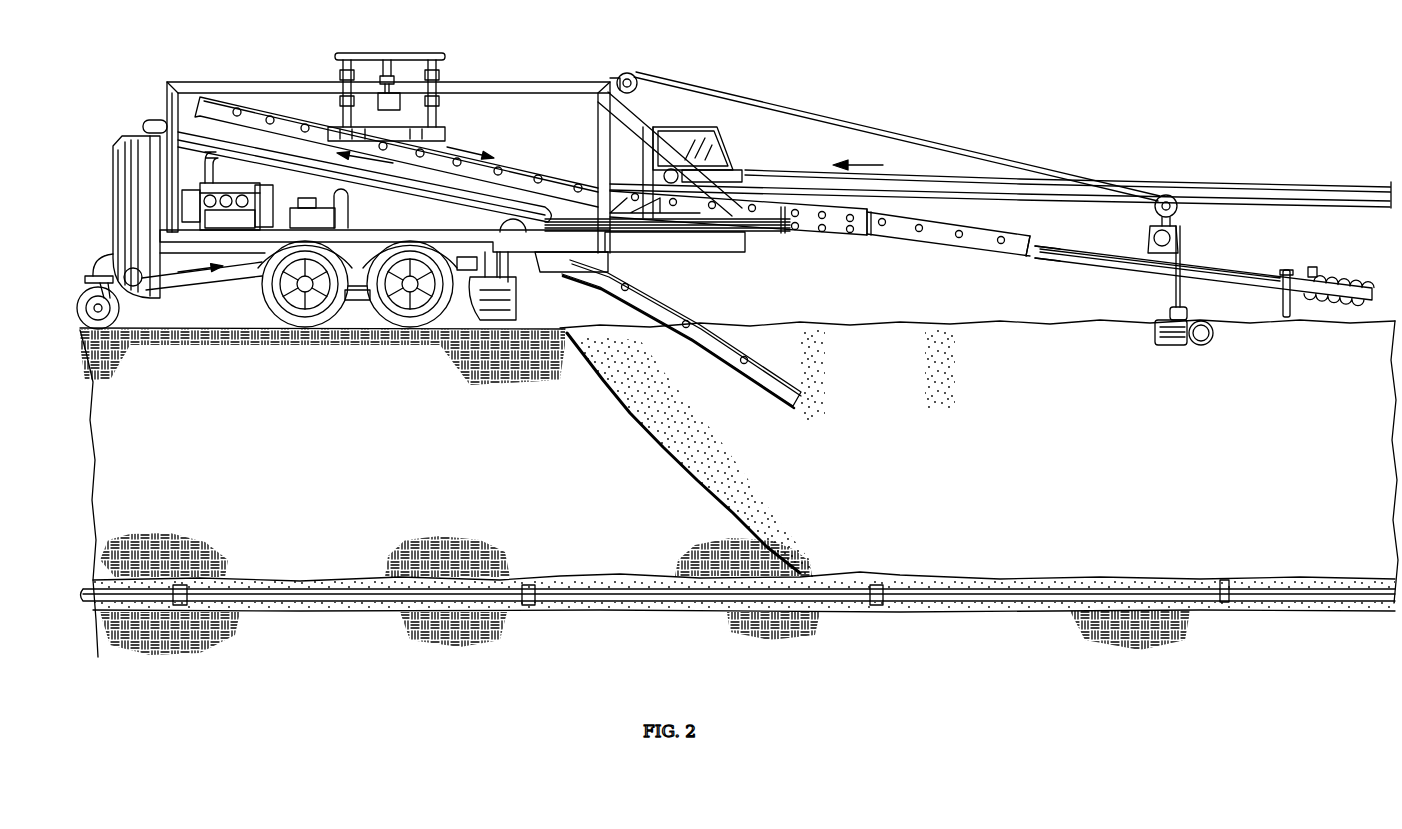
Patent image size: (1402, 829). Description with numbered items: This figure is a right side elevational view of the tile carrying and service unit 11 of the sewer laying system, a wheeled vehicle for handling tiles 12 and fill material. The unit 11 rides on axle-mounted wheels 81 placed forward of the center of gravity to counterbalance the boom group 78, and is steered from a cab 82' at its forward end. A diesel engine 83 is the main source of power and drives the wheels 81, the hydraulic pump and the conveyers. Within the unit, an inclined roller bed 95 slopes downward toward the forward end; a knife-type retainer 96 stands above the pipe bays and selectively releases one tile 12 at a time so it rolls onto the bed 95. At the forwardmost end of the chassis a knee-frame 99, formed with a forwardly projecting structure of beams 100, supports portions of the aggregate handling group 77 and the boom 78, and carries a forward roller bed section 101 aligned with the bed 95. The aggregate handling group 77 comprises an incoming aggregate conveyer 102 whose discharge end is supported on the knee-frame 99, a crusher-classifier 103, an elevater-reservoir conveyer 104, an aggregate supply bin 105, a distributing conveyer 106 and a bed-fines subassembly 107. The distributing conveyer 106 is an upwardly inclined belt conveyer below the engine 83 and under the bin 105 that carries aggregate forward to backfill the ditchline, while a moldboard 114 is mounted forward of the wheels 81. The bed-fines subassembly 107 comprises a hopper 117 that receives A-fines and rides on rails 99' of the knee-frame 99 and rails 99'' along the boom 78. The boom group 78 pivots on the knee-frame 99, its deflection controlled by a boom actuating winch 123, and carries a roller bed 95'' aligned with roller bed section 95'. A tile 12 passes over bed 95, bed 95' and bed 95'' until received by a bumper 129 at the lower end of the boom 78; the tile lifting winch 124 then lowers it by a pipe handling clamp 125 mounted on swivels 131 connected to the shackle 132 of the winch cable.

The tile carrying and service unit 11 is at (284, 86).
The tiles 12 is at (400, 602).
The aggregate handling group 77 is at (952, 175).
The boom group 78 is at (980, 240).
The wheels 81 is at (277, 307).
The cab 82' is at (670, 154).
The diesel engine 83 is at (205, 196).
The roller bed 95 is at (396, 152).
The roller bed section 95' is at (738, 212).
The roller bed 95'' is at (1029, 236).
The knife-type retainer 96 is at (416, 52).
The knee-frame 99 is at (1000, 174).
The rails 99' is at (779, 231).
The rails 99'' is at (897, 238).
The beams 100 is at (707, 228).
The forward section of roller bed 101 is at (748, 190).
The incoming aggregate conveyer 102 is at (1213, 170).
The crusher-classifier 103 is at (648, 180).
The elevater-reservoir conveyer 104 is at (303, 163).
The aggregate supply bin 105 is at (137, 137).
The distributing conveyer 106 is at (165, 288).
The bed-fines subassembly 107 is at (600, 271).
The moldboard 114 is at (455, 327).
The hopper 117 is at (573, 280).
The boom actuating winch 123 is at (622, 74).
The tile lifting winch 124 is at (1182, 239).
The pipe handling clamp 125 is at (1216, 340).
The bumper 129 is at (1340, 273).
The swivels 131 is at (1170, 316).
The shackle 132 is at (1174, 295).